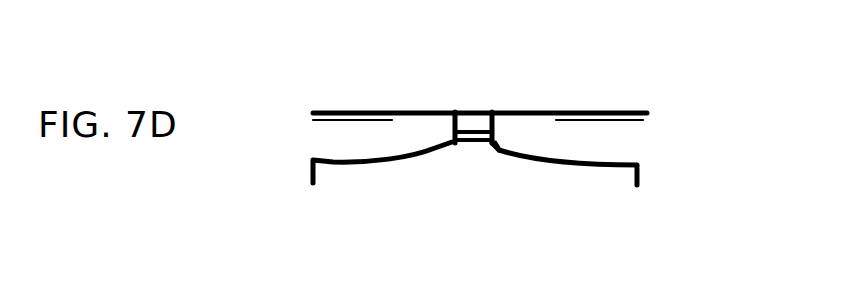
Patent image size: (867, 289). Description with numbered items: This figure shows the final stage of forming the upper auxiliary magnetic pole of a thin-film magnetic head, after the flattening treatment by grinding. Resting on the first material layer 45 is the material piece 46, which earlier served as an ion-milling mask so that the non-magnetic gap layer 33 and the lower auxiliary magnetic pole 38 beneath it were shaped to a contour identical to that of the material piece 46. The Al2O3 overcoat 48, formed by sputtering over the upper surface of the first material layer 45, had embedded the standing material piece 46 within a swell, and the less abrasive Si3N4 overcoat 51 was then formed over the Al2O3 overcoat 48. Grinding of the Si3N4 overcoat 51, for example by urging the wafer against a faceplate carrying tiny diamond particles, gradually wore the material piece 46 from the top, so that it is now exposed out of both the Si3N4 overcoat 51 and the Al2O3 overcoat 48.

The Si3N4 overcoat 51 is at (327, 111).
The Al2O3 overcoat 48 is at (360, 138).
The material piece 46 is at (481, 111).
The non-magnetic gap layer 33 is at (447, 133).
The first material layer 45 is at (627, 162).
The lower auxiliary magnetic pole 38 is at (499, 150).